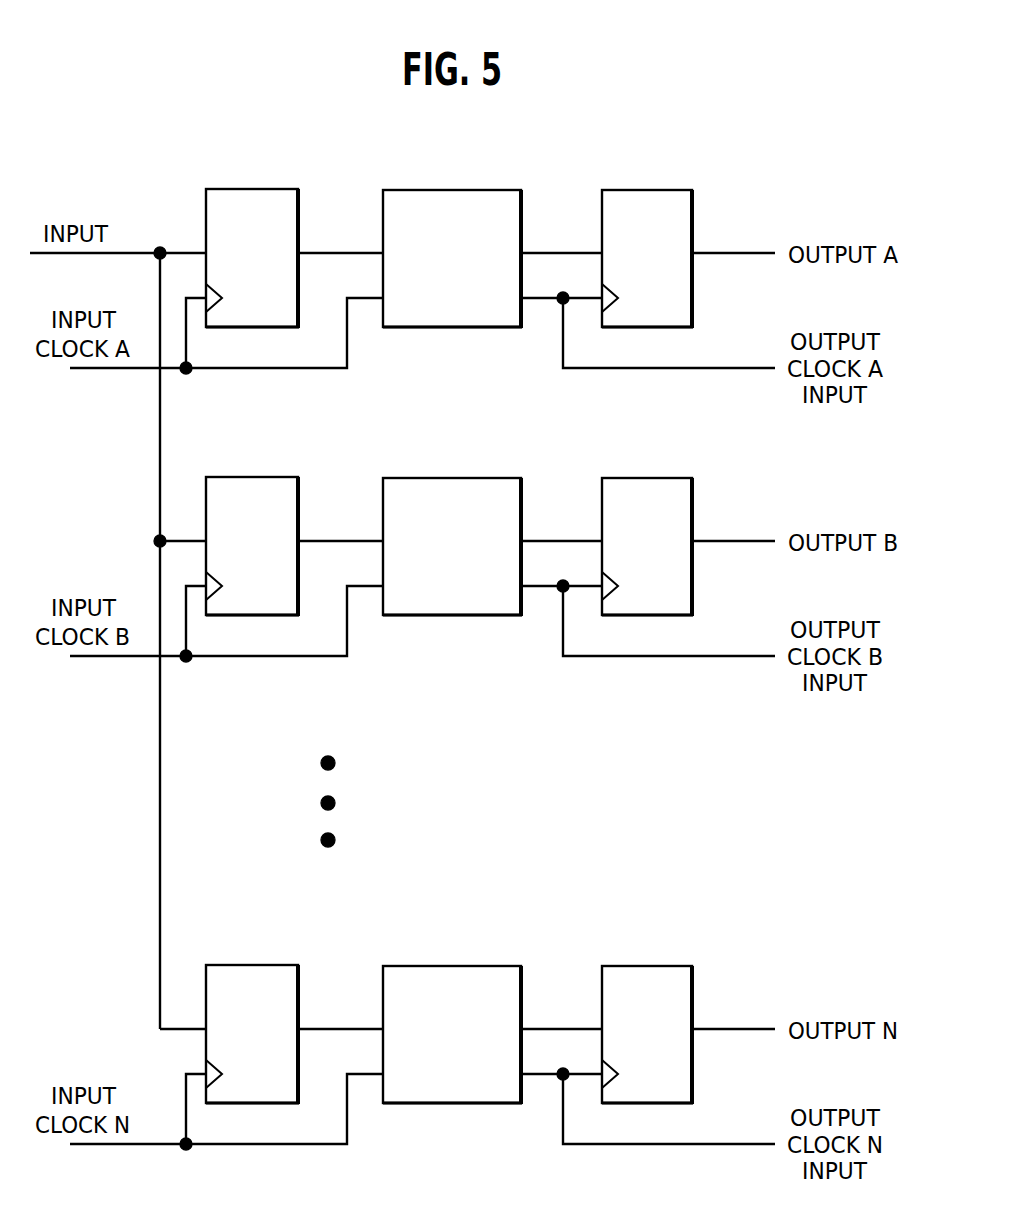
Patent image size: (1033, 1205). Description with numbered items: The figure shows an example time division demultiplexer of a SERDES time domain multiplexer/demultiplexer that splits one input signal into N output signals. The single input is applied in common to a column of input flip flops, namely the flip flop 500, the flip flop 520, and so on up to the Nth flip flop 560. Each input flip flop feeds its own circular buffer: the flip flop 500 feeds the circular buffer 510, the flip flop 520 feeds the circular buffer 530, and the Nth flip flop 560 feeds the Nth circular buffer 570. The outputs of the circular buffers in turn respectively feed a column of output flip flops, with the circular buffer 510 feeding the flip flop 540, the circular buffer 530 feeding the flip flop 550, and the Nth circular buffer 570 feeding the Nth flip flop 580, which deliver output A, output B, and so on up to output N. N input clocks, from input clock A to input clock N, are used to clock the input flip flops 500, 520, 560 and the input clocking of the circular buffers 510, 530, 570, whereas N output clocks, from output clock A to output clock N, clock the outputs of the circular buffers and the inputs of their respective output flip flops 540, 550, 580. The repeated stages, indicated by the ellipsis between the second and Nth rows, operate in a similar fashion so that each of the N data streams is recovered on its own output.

The flip flop 500 is at (253, 188).
The circular buffer 510 is at (449, 188).
The flip flop 540 is at (647, 188).
The flip flop 520 is at (252, 522).
The circular buffer 530 is at (452, 522).
The flip flop 550 is at (647, 522).
The Nth flip flop 560 is at (252, 1010).
The Nth circular buffer 570 is at (452, 1010).
The Nth flip flop 580 is at (647, 1010).